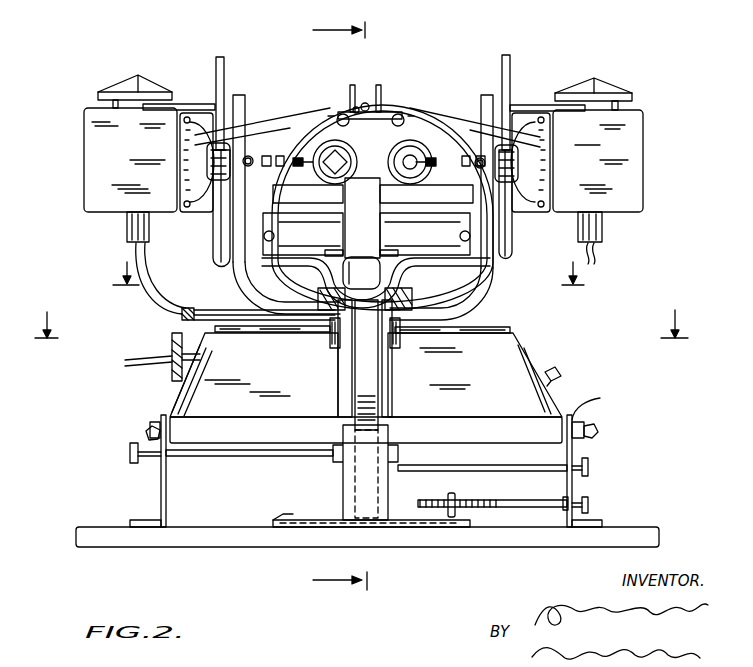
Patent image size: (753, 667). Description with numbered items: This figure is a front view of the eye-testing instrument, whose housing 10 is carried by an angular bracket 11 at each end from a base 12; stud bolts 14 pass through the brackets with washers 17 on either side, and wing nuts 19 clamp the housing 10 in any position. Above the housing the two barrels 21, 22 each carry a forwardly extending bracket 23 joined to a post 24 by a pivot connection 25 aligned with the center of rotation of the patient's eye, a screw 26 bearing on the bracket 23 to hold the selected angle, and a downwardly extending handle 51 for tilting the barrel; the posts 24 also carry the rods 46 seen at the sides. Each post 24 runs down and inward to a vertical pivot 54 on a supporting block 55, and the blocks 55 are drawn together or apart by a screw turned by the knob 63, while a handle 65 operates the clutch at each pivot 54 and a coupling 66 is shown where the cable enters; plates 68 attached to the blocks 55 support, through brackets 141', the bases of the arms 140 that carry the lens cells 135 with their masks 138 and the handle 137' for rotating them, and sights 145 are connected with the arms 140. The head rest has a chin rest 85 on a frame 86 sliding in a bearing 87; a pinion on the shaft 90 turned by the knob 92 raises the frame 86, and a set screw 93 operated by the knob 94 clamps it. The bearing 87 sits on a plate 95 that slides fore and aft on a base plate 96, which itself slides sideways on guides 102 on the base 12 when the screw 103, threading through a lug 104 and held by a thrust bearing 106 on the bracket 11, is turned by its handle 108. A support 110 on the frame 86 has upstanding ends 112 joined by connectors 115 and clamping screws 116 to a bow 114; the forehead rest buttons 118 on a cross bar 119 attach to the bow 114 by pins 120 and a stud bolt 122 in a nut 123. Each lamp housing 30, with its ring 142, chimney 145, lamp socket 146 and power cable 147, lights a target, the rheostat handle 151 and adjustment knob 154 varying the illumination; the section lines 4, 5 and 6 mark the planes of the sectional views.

The housing 10 is at (283, 366).
The angular bracket 11 is at (167, 483).
The base 12 is at (645, 535).
The stud bolt 14 is at (147, 436).
The washer 17 is at (580, 414).
The wing nut 19 is at (150, 428).
The barrel 21 is at (272, 138).
The barrel 22 is at (470, 137).
The bracket 23 is at (210, 184).
The post 24 is at (236, 283).
The pivot connection 25 is at (248, 166).
The screw 26 is at (243, 236).
The lamp housing 30 is at (98, 172).
The rod 46 is at (225, 69).
The handle 51 is at (212, 250).
The pivot 54 is at (325, 340).
The supporting block 55 is at (342, 365).
The knob 63 is at (170, 339).
The handle 65 is at (318, 296).
The coupling 66 is at (182, 316).
The plate 68 is at (236, 333).
The chin rest 85 is at (366, 264).
The frame 86 is at (385, 400).
The bearing 87 is at (343, 480).
The shaft 90 is at (462, 465).
The knob 92 is at (589, 465).
The set screw 93 is at (268, 457).
The knob 94 is at (133, 465).
The plate 95 is at (352, 503).
The base plate 96 is at (330, 520).
The guide 102 is at (273, 520).
The screw 103 is at (512, 500).
The lug 104 is at (455, 500).
The thrust bearing 106 is at (563, 508).
The handle 108 is at (589, 504).
The support 110 is at (420, 262).
The upstanding end 112 is at (275, 252).
The bow 114 is at (420, 118).
The connector 115 is at (273, 224).
The clamping screw 116 is at (275, 236).
The button 118 is at (396, 124).
The cross bar 119 is at (350, 106).
The pin 120 is at (353, 86).
The stud bolt 122 is at (381, 100).
The nut 123 is at (370, 104).
The lens cell 135 is at (339, 146).
The handle 137' is at (373, 172).
The mask 138 is at (382, 175).
The arm 140 is at (350, 210).
The bracket 141' is at (358, 275).
The ring 142 is at (182, 135).
The chimney 145 is at (150, 82).
The lamp socket 146 is at (127, 225).
The power cable 147 is at (134, 252).
The handle 151 is at (190, 388).
The adjustment knob 154 is at (561, 378).
The section line 4 is at (340, 306).
The section line 5 is at (350, 274).
The section line 6 is at (358, 324).